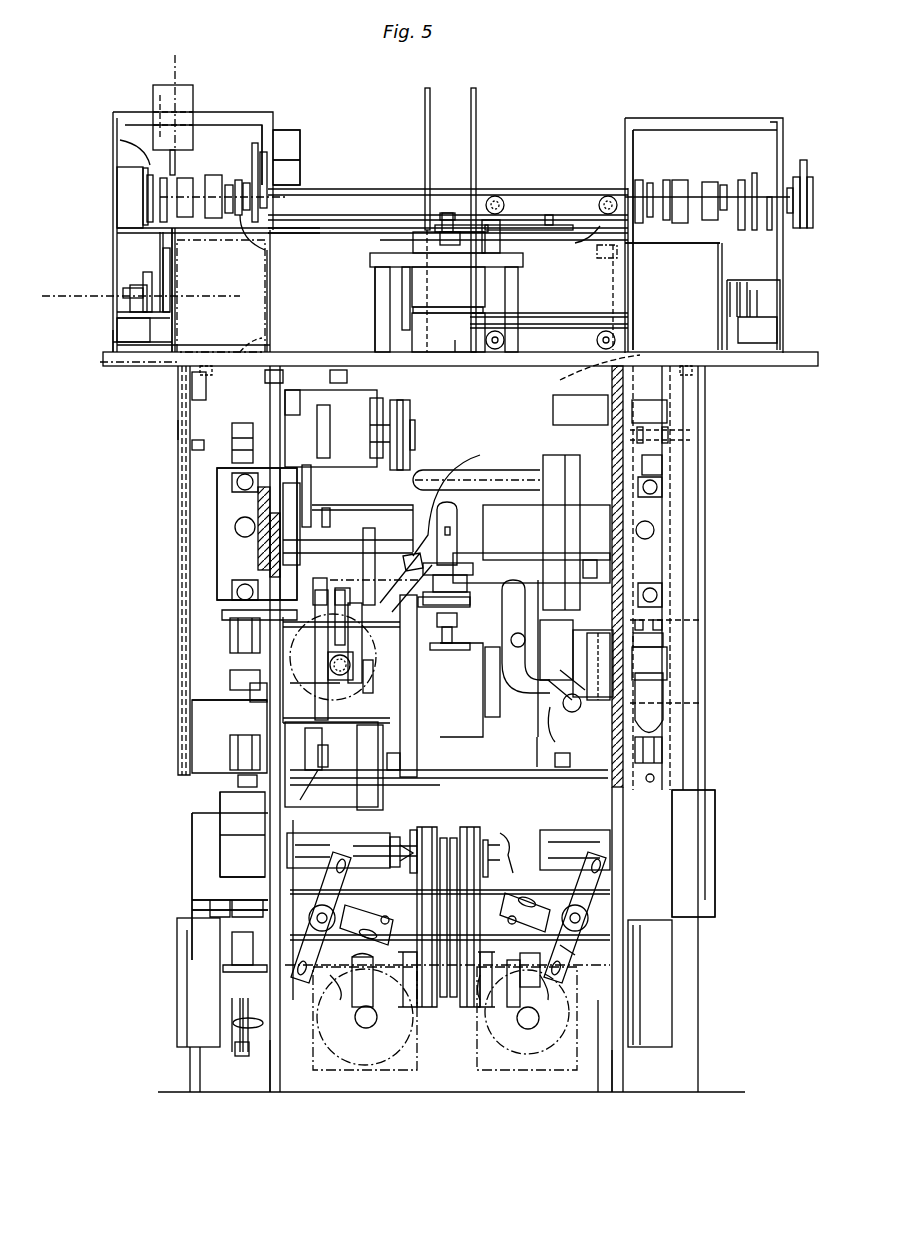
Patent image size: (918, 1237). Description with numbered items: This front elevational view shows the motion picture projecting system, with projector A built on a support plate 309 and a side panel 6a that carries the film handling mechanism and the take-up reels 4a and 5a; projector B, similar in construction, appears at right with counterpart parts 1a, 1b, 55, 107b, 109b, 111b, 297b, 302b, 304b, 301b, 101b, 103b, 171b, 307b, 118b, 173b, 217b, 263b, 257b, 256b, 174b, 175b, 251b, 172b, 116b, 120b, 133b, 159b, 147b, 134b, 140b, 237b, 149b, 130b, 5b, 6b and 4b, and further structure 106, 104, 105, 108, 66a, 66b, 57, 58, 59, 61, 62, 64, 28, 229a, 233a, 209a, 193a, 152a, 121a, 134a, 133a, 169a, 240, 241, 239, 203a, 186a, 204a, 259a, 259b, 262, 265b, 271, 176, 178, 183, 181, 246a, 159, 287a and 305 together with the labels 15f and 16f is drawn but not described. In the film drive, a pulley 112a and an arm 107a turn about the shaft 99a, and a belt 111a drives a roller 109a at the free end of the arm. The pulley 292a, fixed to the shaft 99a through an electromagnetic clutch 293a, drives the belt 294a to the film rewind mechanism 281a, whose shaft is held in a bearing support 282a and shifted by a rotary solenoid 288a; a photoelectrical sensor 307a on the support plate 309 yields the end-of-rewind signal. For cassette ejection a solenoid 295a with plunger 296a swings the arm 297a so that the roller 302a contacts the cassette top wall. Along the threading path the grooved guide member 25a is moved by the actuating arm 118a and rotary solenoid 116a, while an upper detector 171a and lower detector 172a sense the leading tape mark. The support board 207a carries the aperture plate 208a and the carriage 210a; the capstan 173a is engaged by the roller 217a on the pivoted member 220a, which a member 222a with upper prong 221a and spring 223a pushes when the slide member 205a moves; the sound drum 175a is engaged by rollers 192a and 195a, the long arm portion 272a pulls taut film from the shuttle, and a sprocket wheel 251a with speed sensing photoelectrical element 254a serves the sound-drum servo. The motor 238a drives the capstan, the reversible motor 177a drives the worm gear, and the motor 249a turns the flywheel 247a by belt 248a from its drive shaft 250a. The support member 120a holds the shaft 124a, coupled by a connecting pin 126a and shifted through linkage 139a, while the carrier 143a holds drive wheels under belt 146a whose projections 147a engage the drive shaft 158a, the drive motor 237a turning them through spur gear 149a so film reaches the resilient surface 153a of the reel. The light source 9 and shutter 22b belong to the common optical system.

The support plate 309 is at (790, 367).
The section line 16f is at (175, 55).
The solenoid 295a is at (178, 95).
The arm 297a is at (185, 178).
The roller 302a is at (213, 175).
The roller 109a is at (255, 143).
The wall 106 is at (265, 128).
The box 104 is at (285, 140).
The plate 105 is at (288, 162).
The arm 107a is at (267, 185).
The plunger 296a is at (162, 178).
The electromagnetic clutch 293a is at (148, 175).
The shaft 99a is at (117, 195).
The pulley 292a is at (128, 228).
The partition 305 is at (170, 240).
The bearing support 282a is at (163, 262).
The section line 15f is at (42, 296).
The block 287a is at (125, 298).
The rotary solenoid 288a is at (117, 342).
The film rewind mechanism 281a is at (118, 345).
The belt 294a is at (185, 255).
The rail 108 is at (268, 232).
The belt 111a is at (262, 250).
The pulley 112a is at (268, 285).
The leg 66a is at (380, 267).
The upper detector 171a is at (262, 338).
The rotary solenoid 116a is at (338, 352).
The bar 57 is at (523, 259).
The bolt 58 is at (448, 212).
The plate 59 is at (520, 225).
The bolt 61 is at (549, 215).
The link 111b is at (600, 226).
The gear 107b is at (636, 210).
The gear 109b is at (666, 180).
The gear 297b is at (678, 180).
The gear 302b is at (712, 182).
The shaft 304b is at (722, 185).
The pulley 101b is at (803, 160).
The pulley flange 103b is at (790, 214).
The gear 301b is at (742, 230).
The flange 1b is at (770, 230).
The wall 1a is at (636, 250).
The frame 55 is at (628, 320).
The block 64 is at (470, 270).
The base block 66b is at (488, 290).
The post 62 is at (460, 352).
The wire 171b is at (575, 368).
The photoelectrical sensor 307a is at (200, 372).
The pad 307b is at (690, 372).
The actuating arm 118a is at (192, 402).
The column 28 is at (190, 426).
The capstan 173a is at (192, 446).
The roller 217a is at (232, 458).
The aperture plate 208a is at (232, 483).
The carriage 229a is at (222, 505).
The roller 233a is at (235, 527).
The support board 207a is at (258, 545).
The grooved guide member 25a is at (270, 560).
The roller 209a is at (232, 592).
The carriage 210a is at (222, 615).
The slide member 205a is at (230, 635).
The roller 195a is at (230, 680).
The long arm portion 272a is at (250, 692).
The sound drum 175a is at (200, 702).
The roller 192a is at (230, 735).
The sprocket wheel 251a is at (238, 785).
The lower detector 172a is at (192, 815).
The plate 193a is at (265, 800).
The rib 152a is at (265, 835).
The resilient surface 153a is at (265, 877).
The support member 120a is at (192, 900).
The plate 121a is at (210, 910).
The take-up reel 4a is at (177, 935).
The lever 134a is at (232, 950).
The bar 133a is at (240, 972).
The linkage 139a is at (232, 1000).
The take-up reel 5a is at (190, 1065).
The foot 169a is at (240, 1056).
The side panel 6a is at (272, 1065).
The motor 238a is at (347, 383).
The pivoted member 220a is at (322, 440).
The pulley 240 is at (412, 405).
The flange 241 is at (410, 422).
The hub 239 is at (415, 445).
The plate 203a is at (311, 478).
The member 222a is at (310, 497).
The upper prong 221a is at (360, 505).
The spring 223a is at (330, 520).
The plate 186a is at (375, 545).
The bracket 204a is at (295, 565).
The plate 259a is at (455, 472).
The box 116b is at (553, 413).
The shutter 22b is at (570, 465).
The light source 9 is at (457, 530).
The block 262 is at (480, 535).
The plate 259b is at (470, 565).
The tube 265b is at (572, 712).
The arm 271 is at (555, 742).
The housing 176 is at (462, 740).
The bar 178 is at (380, 624).
The block 183 is at (383, 648).
The roller 181 is at (360, 688).
The flywheel 247a is at (417, 715).
The block 246a is at (318, 740).
The reversible motor 177a is at (328, 757).
The drive shaft 158a is at (378, 798).
The speed sensing photoelectrical element 254a is at (322, 770).
The motor 249a is at (392, 770).
The belt 248a is at (530, 780).
The drive shaft 250a is at (440, 786).
The block 263b is at (600, 577).
The bracket 118b is at (667, 408).
The bolt 173b is at (690, 435).
The guide 217b is at (655, 470).
The bolt 257b is at (700, 622).
The plate 256b is at (660, 640).
The block 174b is at (705, 686).
The plate 175b is at (655, 690).
The spool 251b is at (662, 750).
The plate 172b is at (660, 785).
The shaft 124a is at (362, 845).
The connecting pin 126a is at (333, 852).
The projections 147a is at (400, 862).
The carrier 143a is at (452, 840).
The arm 147b is at (508, 840).
The cylinder 159b is at (545, 830).
The lever 134b is at (540, 900).
The cylinder 159 is at (355, 1018).
The belt 146a is at (420, 1010).
The bracket 140b is at (480, 1010).
The drive motor 237a is at (417, 1070).
The reel 237b is at (485, 1070).
The spur gear 149a is at (340, 985).
The arm 149b is at (478, 985).
The arm 130b is at (545, 985).
The plate 120b is at (598, 1020).
The bar 133b is at (570, 955).
The leg 5b is at (660, 1040).
The column 6b is at (623, 1070).
The frame 4b is at (700, 917).